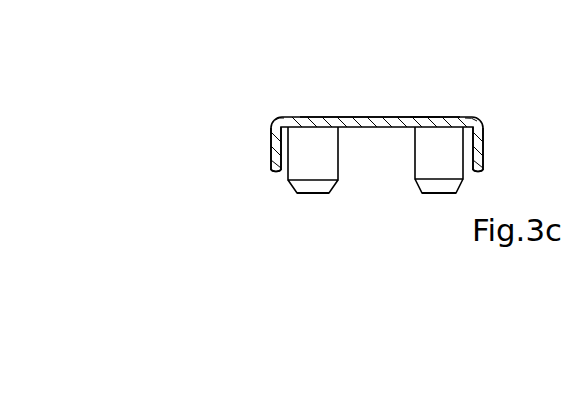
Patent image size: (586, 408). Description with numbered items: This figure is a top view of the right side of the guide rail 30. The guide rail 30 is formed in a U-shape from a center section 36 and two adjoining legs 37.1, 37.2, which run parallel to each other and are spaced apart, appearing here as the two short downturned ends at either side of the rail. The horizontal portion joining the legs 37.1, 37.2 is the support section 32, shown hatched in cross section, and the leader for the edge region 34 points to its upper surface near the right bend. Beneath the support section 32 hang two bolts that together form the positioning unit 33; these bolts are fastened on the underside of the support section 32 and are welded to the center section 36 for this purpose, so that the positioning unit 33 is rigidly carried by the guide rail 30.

The guide rail 30 is at (367, 113).
The support section 32 is at (345, 115).
The positioning unit 33 is at (427, 170).
The plate edge 34 is at (420, 118).
The center section 36 is at (391, 117).
The leg 37.1 is at (270, 145).
The leg 37.2 is at (482, 132).